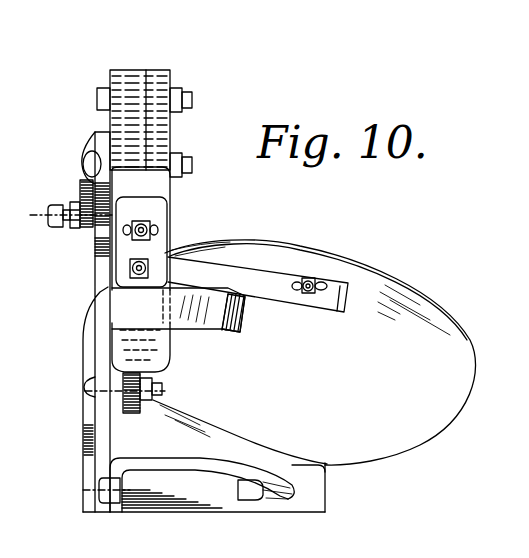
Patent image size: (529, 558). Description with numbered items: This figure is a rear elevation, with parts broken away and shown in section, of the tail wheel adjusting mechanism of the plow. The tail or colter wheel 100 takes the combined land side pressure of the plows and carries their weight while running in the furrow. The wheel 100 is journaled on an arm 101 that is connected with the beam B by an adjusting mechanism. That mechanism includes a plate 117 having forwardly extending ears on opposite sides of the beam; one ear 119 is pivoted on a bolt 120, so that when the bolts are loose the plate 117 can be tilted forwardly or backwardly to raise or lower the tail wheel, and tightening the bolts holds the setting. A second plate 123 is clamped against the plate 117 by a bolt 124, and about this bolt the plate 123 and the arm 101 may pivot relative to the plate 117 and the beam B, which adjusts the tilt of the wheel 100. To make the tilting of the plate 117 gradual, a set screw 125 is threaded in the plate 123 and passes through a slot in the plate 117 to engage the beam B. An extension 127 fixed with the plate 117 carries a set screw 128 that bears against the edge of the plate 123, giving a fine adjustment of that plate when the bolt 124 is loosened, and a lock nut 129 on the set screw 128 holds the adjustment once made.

The beam B is at (163, 70).
The tail or colter wheel 100 is at (392, 316).
The arm 101 is at (243, 318).
The plate 117 is at (155, 192).
The ear 119 is at (133, 417).
The bolt 120 is at (88, 395).
The plate 123 is at (133, 253).
The bolt 124 is at (150, 266).
The set screw 125 is at (150, 230).
The extension 127 is at (80, 183).
The set screw 128 is at (49, 218).
The lock nut 129 is at (78, 228).